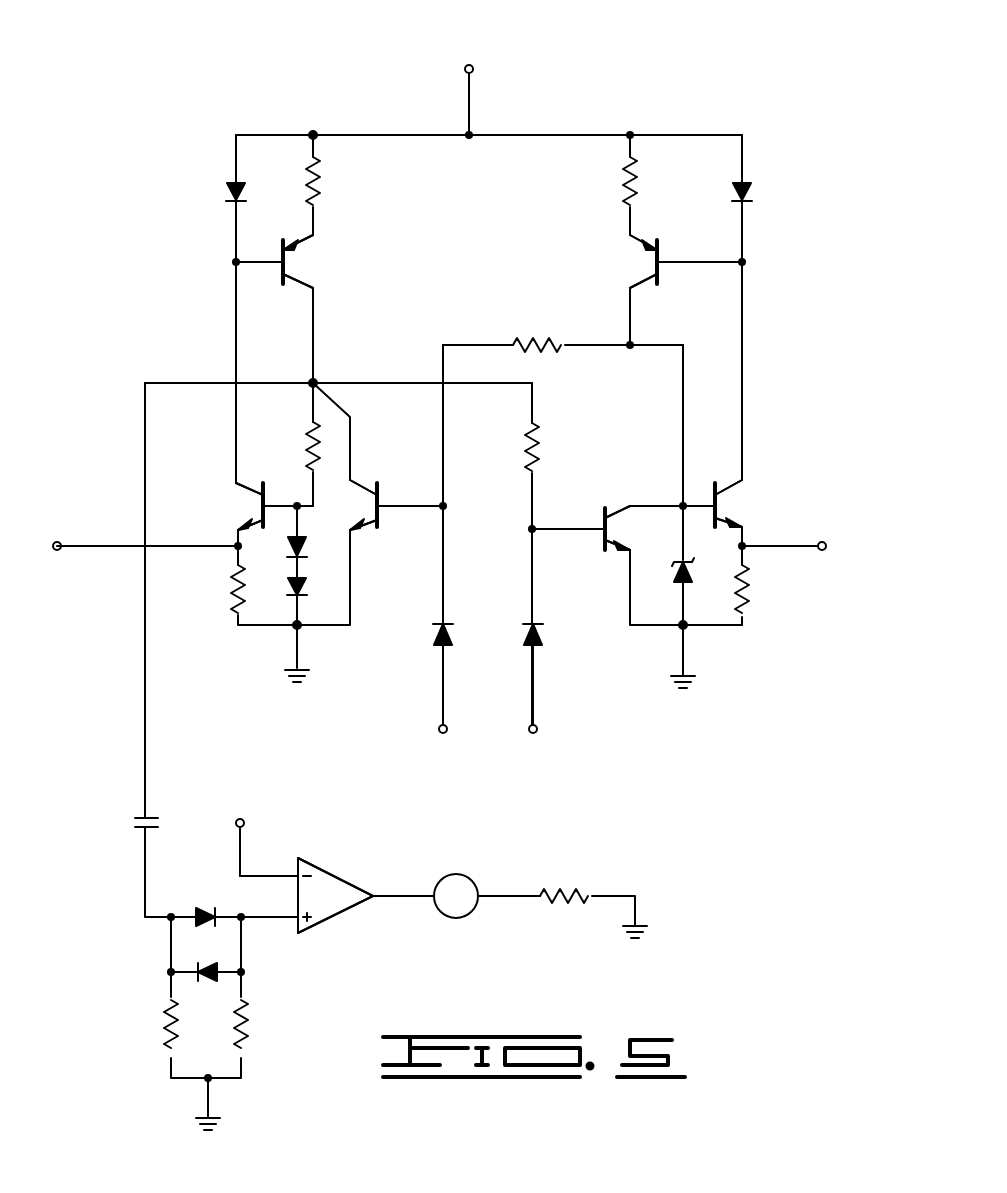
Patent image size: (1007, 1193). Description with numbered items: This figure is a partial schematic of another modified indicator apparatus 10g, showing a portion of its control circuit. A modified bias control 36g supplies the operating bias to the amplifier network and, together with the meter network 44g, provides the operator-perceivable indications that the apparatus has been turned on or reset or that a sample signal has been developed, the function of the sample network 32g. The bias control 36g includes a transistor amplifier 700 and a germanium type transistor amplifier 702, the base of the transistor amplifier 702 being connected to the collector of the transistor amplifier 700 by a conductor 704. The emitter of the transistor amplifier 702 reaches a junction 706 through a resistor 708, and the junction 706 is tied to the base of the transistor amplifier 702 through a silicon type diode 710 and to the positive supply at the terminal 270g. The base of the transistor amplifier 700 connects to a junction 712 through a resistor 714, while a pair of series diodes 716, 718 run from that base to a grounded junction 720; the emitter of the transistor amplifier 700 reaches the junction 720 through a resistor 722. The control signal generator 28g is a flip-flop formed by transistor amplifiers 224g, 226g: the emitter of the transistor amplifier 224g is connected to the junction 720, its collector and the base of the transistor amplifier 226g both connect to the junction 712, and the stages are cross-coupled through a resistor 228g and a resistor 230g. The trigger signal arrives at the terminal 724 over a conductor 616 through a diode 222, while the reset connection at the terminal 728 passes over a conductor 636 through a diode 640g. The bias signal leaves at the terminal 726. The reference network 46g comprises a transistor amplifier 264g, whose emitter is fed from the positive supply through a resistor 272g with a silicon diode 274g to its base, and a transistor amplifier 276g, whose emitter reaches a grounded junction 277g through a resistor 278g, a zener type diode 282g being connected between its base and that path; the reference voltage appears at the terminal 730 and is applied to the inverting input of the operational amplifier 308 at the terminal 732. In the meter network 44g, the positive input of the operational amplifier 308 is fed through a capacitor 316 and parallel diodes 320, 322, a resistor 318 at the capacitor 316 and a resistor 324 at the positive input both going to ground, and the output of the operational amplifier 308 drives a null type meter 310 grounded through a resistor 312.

The indicator apparatus 10g is at (612, 72).
The terminal 270g is at (476, 66).
The junction 706 is at (313, 131).
The resistor 708 is at (319, 178).
The silicon type diode 710 is at (226, 190).
The germanium type transistor amplifier 702 is at (298, 258).
The conductor 704 is at (234, 284).
The bias control 36g is at (228, 318).
The sample network 32g is at (228, 352).
The control signal generator 28g is at (450, 330).
The resistor 228g is at (565, 332).
The resistor 272g is at (624, 178).
The transistor amplifier 264g is at (648, 262).
The silicon diode 274g is at (752, 190).
The junction 712 is at (316, 378).
The resistor 714 is at (308, 440).
The transistor amplifier 224g is at (382, 496).
The resistor 230g is at (540, 446).
The reference network 46g is at (760, 456).
The transistor amplifier 700 is at (254, 506).
The terminal 726 is at (60, 540).
The transistor amplifier 226g is at (600, 520).
The transistor amplifier 276g is at (722, 502).
The terminal 730 is at (826, 542).
The diode 716 is at (306, 546).
The diode 718 is at (306, 585).
The resistor 722 is at (232, 592).
The junction 720 is at (296, 630).
The zener type diode 282g is at (676, 576).
The resistor 278g is at (752, 604).
The junction 277g is at (688, 630).
The diode 222 is at (432, 634).
The diode 640g is at (543, 638).
The conductor 616 is at (443, 678).
The conductor 636 is at (535, 688).
The terminal 724 is at (439, 731).
The terminal 728 is at (537, 731).
The capacitor 316 is at (158, 824).
The terminal 732 is at (242, 818).
The operational amplifier 308 is at (326, 870).
The meter 310 is at (454, 874).
The resistor 312 is at (568, 890).
The diode 322 is at (196, 926).
The meter network 44g is at (337, 952).
The diode 320 is at (210, 980).
The resistor 318 is at (164, 1036).
The resistor 324 is at (248, 1046).